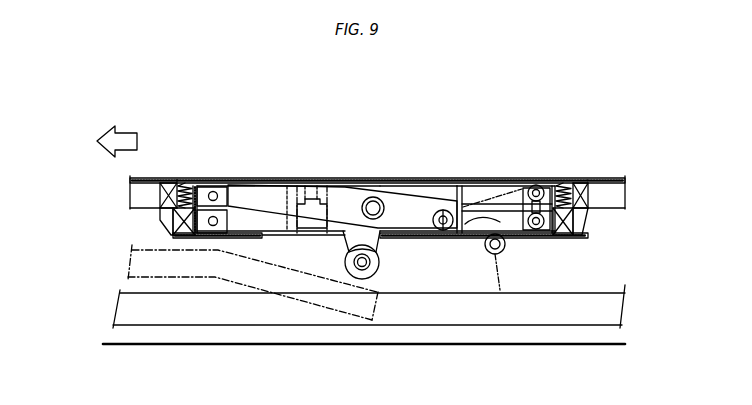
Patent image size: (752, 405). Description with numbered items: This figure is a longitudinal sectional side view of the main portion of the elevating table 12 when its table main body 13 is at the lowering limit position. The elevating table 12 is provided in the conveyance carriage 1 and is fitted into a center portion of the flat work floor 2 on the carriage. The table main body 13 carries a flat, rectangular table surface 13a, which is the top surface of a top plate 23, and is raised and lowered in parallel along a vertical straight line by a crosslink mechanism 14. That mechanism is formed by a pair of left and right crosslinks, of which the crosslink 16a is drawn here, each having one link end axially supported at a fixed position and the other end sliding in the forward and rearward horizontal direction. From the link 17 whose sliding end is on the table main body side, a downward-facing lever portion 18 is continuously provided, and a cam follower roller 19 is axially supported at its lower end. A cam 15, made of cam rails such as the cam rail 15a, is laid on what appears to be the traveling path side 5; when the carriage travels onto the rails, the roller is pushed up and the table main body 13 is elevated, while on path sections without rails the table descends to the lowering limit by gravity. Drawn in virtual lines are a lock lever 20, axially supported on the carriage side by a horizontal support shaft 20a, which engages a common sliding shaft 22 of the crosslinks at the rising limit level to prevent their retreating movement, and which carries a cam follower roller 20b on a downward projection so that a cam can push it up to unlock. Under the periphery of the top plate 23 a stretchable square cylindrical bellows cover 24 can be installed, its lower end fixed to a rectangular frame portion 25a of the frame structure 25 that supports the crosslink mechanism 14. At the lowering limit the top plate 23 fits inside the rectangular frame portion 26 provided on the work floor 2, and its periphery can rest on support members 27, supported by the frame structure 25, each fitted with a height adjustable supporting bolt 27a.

The conveyance carriage 1 is at (620, 172).
The work floor 2 is at (597, 180).
The base rail 5 is at (445, 307).
The elevating table 12 is at (248, 174).
The table main body 13 is at (410, 179).
The table surface 13a is at (512, 179).
The crosslink mechanism 14 is at (375, 186).
The cam 15 is at (243, 284).
The cam rail 15a is at (288, 284).
The crosslink 16a is at (440, 178).
The link 17 is at (260, 221).
The lever portion 18 is at (345, 240).
The cam follower roller 19 is at (379, 262).
The lock lever 20 is at (490, 199).
The horizontal support shaft 20a is at (443, 230).
The cam follower roller 20b is at (505, 286).
The common sliding shaft 22 is at (510, 245).
The top plate 23 is at (349, 178).
The stretchable square cylindrical cover 24 is at (187, 181).
The frame structure 25 is at (212, 242).
The rectangular frame portion 25a is at (170, 222).
The rectangular frame portion 26 is at (160, 197).
The support member 27 is at (303, 192).
The supporting bolt 27a is at (312, 185).